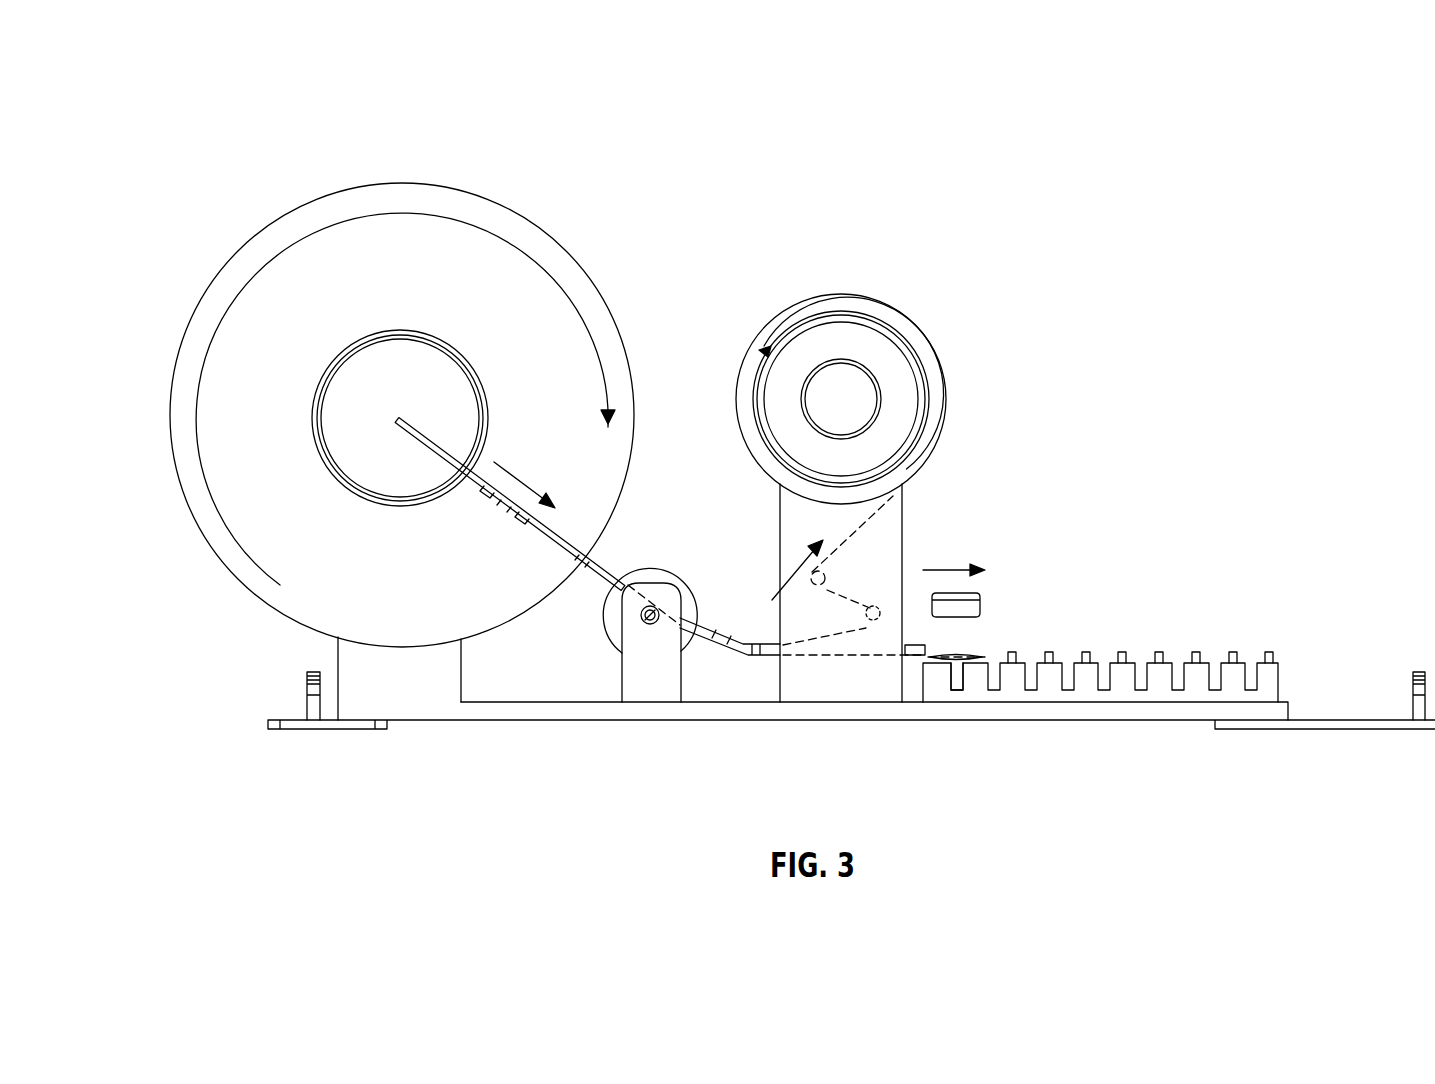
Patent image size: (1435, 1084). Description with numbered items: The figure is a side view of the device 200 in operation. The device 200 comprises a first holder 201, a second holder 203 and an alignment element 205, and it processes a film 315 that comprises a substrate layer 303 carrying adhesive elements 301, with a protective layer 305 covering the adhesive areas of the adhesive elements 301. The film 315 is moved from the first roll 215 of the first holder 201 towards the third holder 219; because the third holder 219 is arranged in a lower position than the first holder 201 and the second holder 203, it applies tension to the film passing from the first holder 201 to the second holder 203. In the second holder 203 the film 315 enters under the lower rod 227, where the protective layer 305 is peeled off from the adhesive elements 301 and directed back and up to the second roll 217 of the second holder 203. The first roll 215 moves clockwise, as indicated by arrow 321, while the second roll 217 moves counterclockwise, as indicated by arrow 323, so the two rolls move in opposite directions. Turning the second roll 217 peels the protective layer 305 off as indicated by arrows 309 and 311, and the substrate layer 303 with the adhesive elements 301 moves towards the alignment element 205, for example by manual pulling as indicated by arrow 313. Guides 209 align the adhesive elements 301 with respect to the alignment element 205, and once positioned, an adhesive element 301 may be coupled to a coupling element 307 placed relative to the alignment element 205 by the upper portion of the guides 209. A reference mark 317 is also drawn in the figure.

The device 200 is at (293, 158).
The first holder 201 is at (362, 674).
The second holder 203 is at (905, 506).
The alignment element 205 is at (1238, 670).
The guides 209 is at (975, 662).
The first roll 215 is at (168, 398).
The second roll 217 is at (900, 420).
The third holder 219 is at (628, 663).
The lower rod 227 is at (872, 622).
The adhesive elements 301 is at (486, 492).
The substrate layer 303 is at (580, 560).
The protective layer 305 is at (790, 305).
The coupling element 307 is at (980, 605).
The arrow 309 is at (532, 486).
The arrow 311 is at (782, 577).
The arrow 313 is at (955, 560).
The film 315 is at (502, 505).
The pivot point 317 is at (818, 588).
The arrow 321 is at (487, 228).
The arrow 323 is at (923, 350).